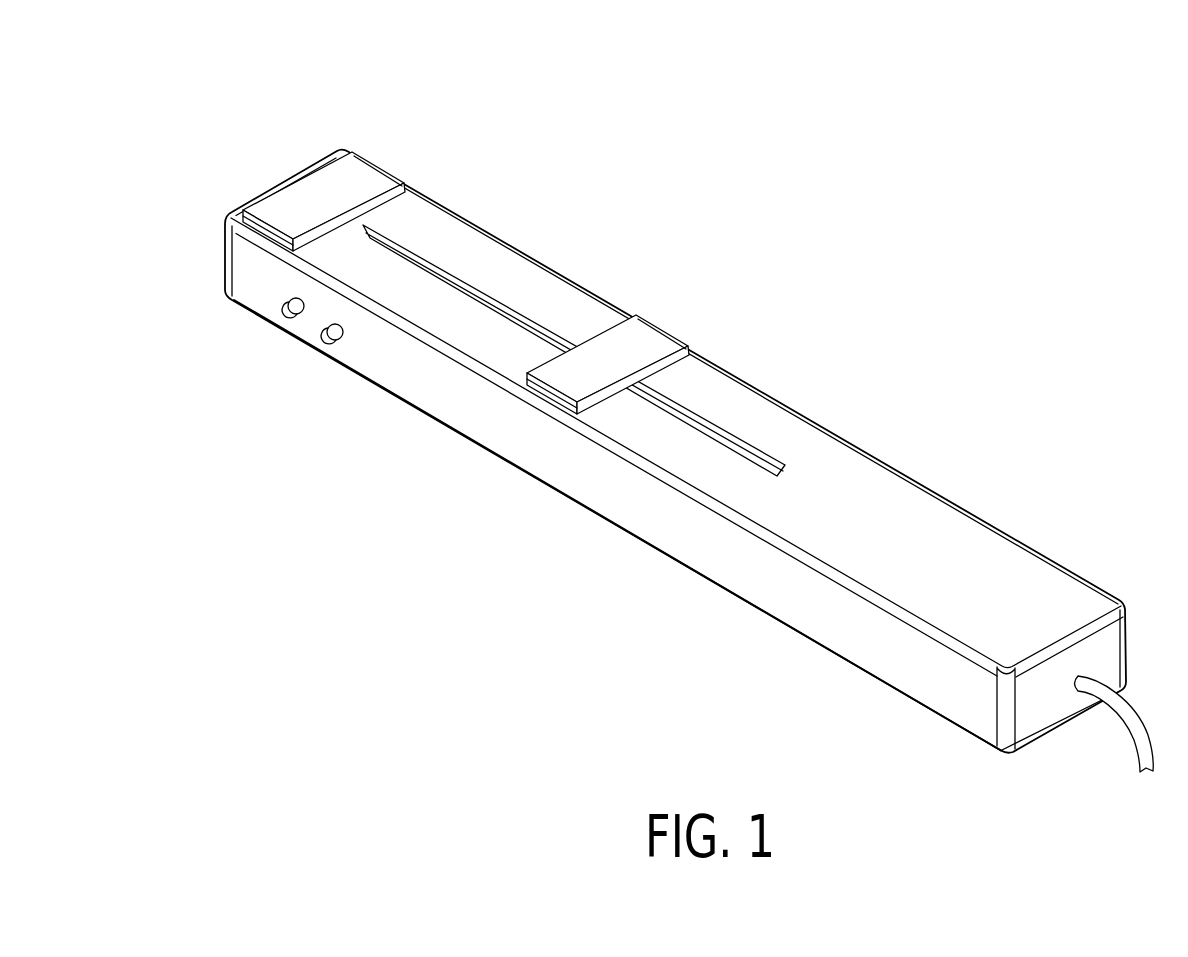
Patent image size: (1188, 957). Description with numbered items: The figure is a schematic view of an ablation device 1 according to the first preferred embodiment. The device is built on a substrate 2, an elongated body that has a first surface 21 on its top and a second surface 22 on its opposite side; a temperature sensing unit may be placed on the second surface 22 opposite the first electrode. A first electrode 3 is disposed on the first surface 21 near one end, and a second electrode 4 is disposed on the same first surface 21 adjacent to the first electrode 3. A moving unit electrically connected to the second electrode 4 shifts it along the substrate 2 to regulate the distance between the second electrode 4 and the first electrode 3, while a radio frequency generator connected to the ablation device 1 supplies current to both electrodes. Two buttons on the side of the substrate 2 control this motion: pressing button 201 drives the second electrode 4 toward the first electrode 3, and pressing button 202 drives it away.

The ablation device 1 is at (238, 128).
The substrate 2 is at (550, 470).
The first surface 21 is at (1042, 587).
The second surface 22 is at (880, 682).
The button 201 is at (288, 318).
The button 202 is at (333, 340).
The first electrode 3 is at (362, 177).
The second electrode 4 is at (638, 335).